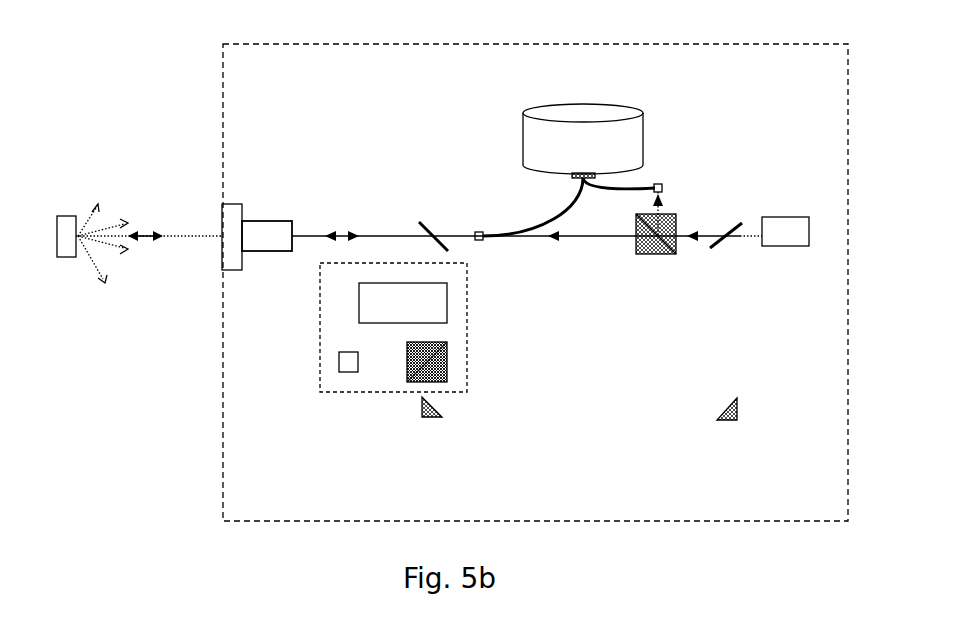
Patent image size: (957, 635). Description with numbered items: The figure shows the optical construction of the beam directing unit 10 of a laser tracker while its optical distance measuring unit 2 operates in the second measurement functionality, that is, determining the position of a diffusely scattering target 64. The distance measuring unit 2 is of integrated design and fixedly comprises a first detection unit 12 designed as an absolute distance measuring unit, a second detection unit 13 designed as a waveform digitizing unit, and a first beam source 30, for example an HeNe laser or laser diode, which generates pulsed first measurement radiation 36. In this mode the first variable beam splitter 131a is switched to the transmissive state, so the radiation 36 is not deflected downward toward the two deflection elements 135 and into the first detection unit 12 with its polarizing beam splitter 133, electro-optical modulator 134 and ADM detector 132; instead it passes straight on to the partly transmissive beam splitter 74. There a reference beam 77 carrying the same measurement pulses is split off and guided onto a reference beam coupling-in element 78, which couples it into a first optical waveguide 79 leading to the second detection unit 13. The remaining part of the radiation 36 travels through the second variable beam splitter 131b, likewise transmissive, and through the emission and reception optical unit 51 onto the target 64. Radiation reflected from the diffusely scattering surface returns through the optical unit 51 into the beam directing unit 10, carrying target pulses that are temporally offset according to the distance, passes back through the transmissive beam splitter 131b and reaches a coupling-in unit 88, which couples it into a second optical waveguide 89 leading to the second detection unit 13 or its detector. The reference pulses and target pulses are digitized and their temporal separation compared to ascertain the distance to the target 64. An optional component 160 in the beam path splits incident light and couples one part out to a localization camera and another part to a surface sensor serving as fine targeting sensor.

The beam directing unit 10 is at (265, 78).
The optical distance measuring unit 2 is at (706, 91).
The first detection unit 12 is at (363, 385).
The electro-optical modulator 134 is at (363, 308).
The ADM detector 132 is at (345, 367).
The polarizing beam splitter 133 is at (445, 373).
The deflection elements 135 is at (717, 420).
The diffusely scattering target 64 is at (68, 252).
The first measurement radiation 36 is at (110, 232).
The emission and reception optical unit 51 is at (232, 245).
The component 160 is at (257, 235).
The second variable beam splitter 131b is at (419, 220).
The coupling-in unit 88 is at (477, 230).
The second optical waveguide 89 is at (540, 220).
The second detection unit 13 is at (567, 145).
The first optical waveguide 79 is at (625, 188).
The reference beam coupling-in element 78 is at (663, 186).
The reference beam 77 is at (636, 213).
The partly transmissive beam splitter 74 is at (653, 254).
The first variable beam splitter 131a is at (733, 230).
The first beam source 30 is at (777, 232).